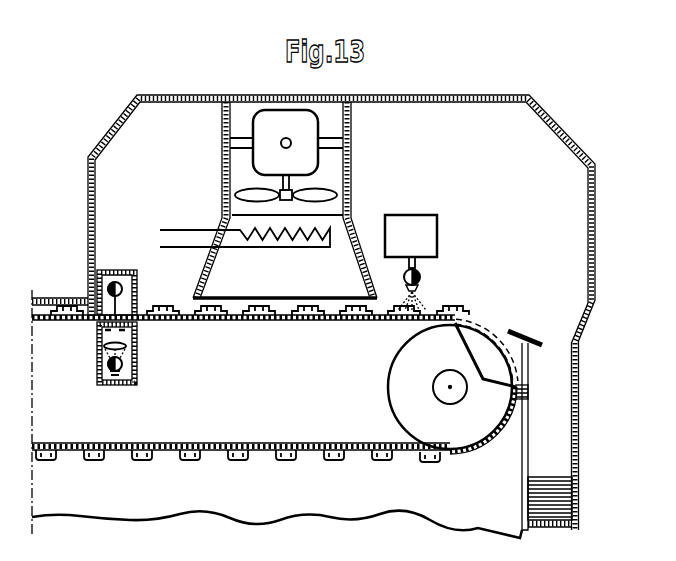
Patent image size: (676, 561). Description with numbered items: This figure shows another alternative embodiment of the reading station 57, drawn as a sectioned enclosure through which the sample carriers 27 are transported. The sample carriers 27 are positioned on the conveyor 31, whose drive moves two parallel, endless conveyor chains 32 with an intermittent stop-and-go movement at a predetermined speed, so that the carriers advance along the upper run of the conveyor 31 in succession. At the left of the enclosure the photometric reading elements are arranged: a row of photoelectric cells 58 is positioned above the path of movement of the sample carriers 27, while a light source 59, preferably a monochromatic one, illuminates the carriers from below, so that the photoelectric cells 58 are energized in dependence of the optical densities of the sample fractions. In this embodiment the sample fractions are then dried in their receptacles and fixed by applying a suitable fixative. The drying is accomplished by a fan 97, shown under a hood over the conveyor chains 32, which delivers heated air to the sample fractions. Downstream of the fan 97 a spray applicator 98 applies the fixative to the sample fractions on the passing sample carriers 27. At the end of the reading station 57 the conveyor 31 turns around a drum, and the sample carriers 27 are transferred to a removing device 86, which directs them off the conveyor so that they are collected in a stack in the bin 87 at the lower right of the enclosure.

The reading station 57 is at (112, 107).
The fan 97 is at (305, 163).
The spray applicator 98 is at (421, 275).
The photoelectric cells 58 is at (97, 277).
The light source 59 is at (97, 365).
The endless conveyor chains 32 is at (158, 321).
The sample carrier 27 is at (232, 321).
The conveyor 31 is at (140, 473).
The removing device 86 is at (520, 365).
The bin 87 is at (578, 405).